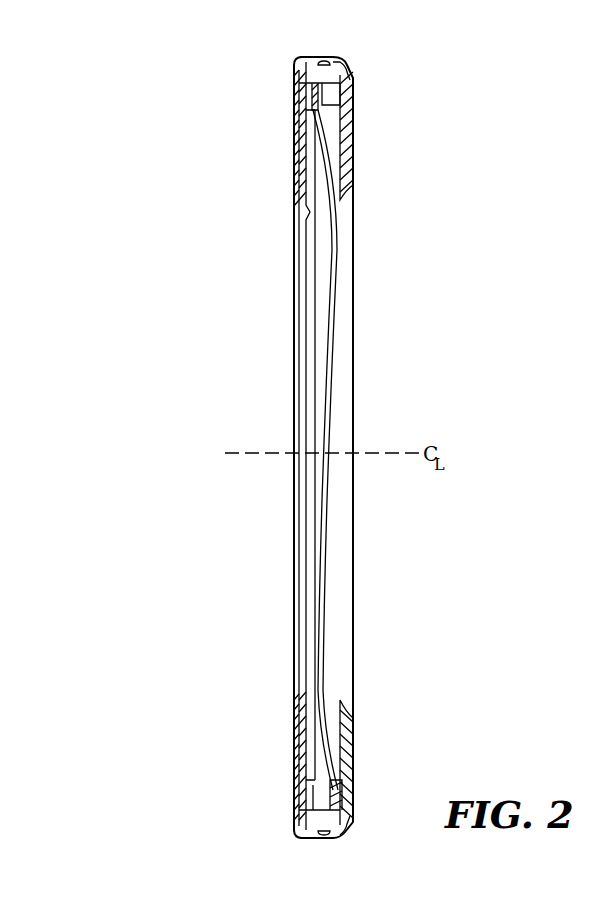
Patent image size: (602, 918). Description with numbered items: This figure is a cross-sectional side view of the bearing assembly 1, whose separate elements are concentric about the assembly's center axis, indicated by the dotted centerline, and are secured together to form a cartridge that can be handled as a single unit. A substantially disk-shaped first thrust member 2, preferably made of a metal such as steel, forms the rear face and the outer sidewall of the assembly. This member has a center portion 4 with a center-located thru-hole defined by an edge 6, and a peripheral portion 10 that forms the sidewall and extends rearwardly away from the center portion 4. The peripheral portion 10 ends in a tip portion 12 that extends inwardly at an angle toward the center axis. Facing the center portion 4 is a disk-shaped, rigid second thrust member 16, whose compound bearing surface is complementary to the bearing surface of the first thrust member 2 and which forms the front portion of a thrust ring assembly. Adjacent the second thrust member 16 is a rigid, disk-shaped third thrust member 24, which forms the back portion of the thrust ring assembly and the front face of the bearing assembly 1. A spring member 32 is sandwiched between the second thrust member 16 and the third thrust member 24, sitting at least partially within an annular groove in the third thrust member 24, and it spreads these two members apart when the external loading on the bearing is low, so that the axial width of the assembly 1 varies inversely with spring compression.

The bearing assembly 1 is at (430, 307).
The first thrust member 2 is at (296, 62).
The center portion 4 is at (298, 90).
The edge 6 is at (301, 212).
The peripheral portion 10 is at (323, 60).
The tip portion 12 is at (343, 62).
The second thrust member 16 is at (307, 60).
The third thrust member 24 is at (343, 157).
The spring member 32 is at (320, 100).